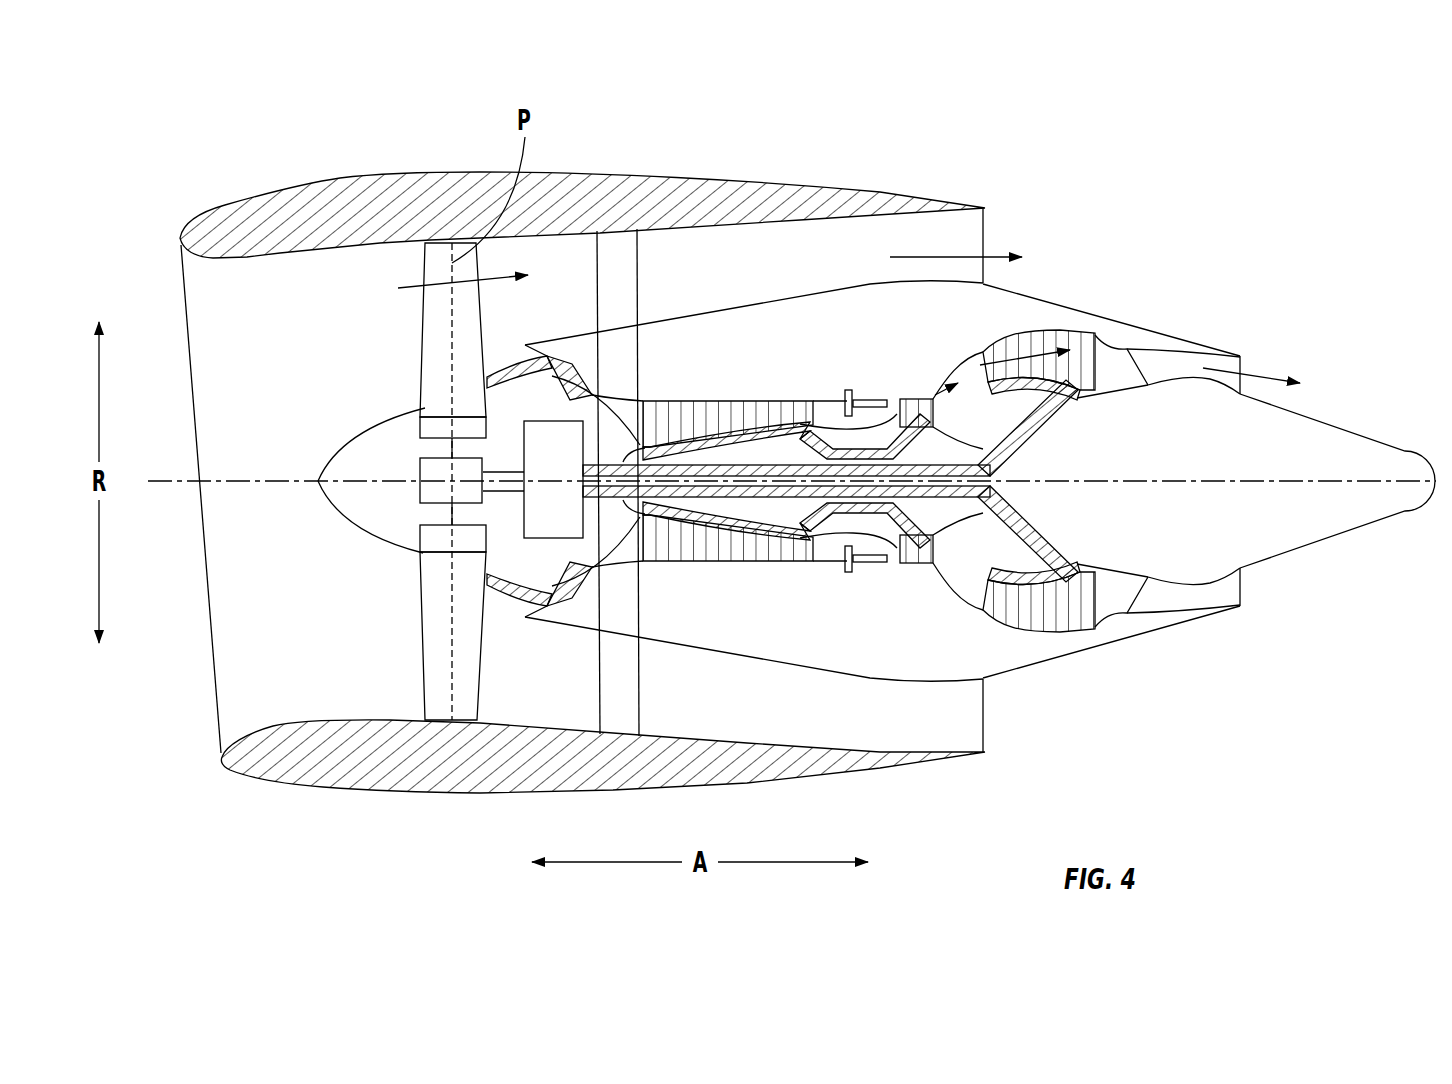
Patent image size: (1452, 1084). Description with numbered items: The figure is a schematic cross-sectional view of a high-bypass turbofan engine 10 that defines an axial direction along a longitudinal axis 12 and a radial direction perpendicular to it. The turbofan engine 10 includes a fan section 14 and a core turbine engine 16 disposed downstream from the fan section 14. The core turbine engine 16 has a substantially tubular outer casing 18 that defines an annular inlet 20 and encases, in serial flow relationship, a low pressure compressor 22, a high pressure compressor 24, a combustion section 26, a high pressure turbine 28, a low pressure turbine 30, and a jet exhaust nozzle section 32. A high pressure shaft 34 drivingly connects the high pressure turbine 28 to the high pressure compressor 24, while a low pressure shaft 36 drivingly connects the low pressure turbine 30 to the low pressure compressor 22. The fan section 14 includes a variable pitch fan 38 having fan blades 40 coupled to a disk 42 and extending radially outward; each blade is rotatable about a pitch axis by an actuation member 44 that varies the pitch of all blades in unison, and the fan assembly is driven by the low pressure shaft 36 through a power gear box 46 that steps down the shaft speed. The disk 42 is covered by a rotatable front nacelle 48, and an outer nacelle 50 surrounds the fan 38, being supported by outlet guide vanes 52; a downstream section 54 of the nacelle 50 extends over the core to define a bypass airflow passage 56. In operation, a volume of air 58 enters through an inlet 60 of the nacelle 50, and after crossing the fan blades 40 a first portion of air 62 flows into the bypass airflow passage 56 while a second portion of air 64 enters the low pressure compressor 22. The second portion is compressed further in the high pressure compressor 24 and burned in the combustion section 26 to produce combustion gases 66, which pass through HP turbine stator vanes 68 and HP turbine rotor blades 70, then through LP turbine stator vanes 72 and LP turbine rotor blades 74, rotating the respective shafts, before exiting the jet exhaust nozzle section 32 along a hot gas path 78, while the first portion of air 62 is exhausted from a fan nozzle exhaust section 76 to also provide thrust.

The turbofan engine 10 is at (1147, 190).
The longitudinal axis 12 is at (1174, 481).
The fan section 14 is at (373, 268).
The core turbine engine 16 is at (777, 347).
The outer casing 18 is at (818, 668).
The annular inlet 20 is at (538, 600).
The low pressure compressor 22 is at (590, 580).
The high pressure compressor 24 is at (672, 545).
The combustion section 26 is at (868, 566).
The high pressure turbine 28 is at (937, 563).
The low pressure turbine 30 is at (1078, 625).
The jet exhaust nozzle section 32 is at (1145, 602).
The high pressure shaft 34 is at (932, 436).
The low pressure shaft 36 is at (1010, 440).
The variable pitch fan 38 is at (383, 541).
The fan blades 40 is at (422, 653).
The disk 42 is at (440, 427).
The actuation member 44 is at (418, 461).
The power gear box 46 is at (563, 440).
The front nacelle 48 is at (335, 500).
The outer nacelle 50 is at (472, 796).
The outlet guide vanes 52 is at (640, 264).
The downstream section 54 is at (922, 200).
The bypass airflow passage 56 is at (810, 275).
The volume of air 58 is at (312, 365).
The inlet 60 is at (217, 722).
The first portion of air 62 is at (440, 280).
The second portion of air 64 is at (505, 358).
The combustion gases 66 is at (1030, 347).
The HP turbine stator vanes 68 is at (887, 572).
The HP turbine rotor blades 70 is at (907, 537).
The LP turbine stator vanes 72 is at (990, 612).
The LP turbine rotor blades 74 is at (1003, 615).
The fan nozzle exhaust section 76 is at (972, 237).
The hot gas path 78 is at (960, 372).